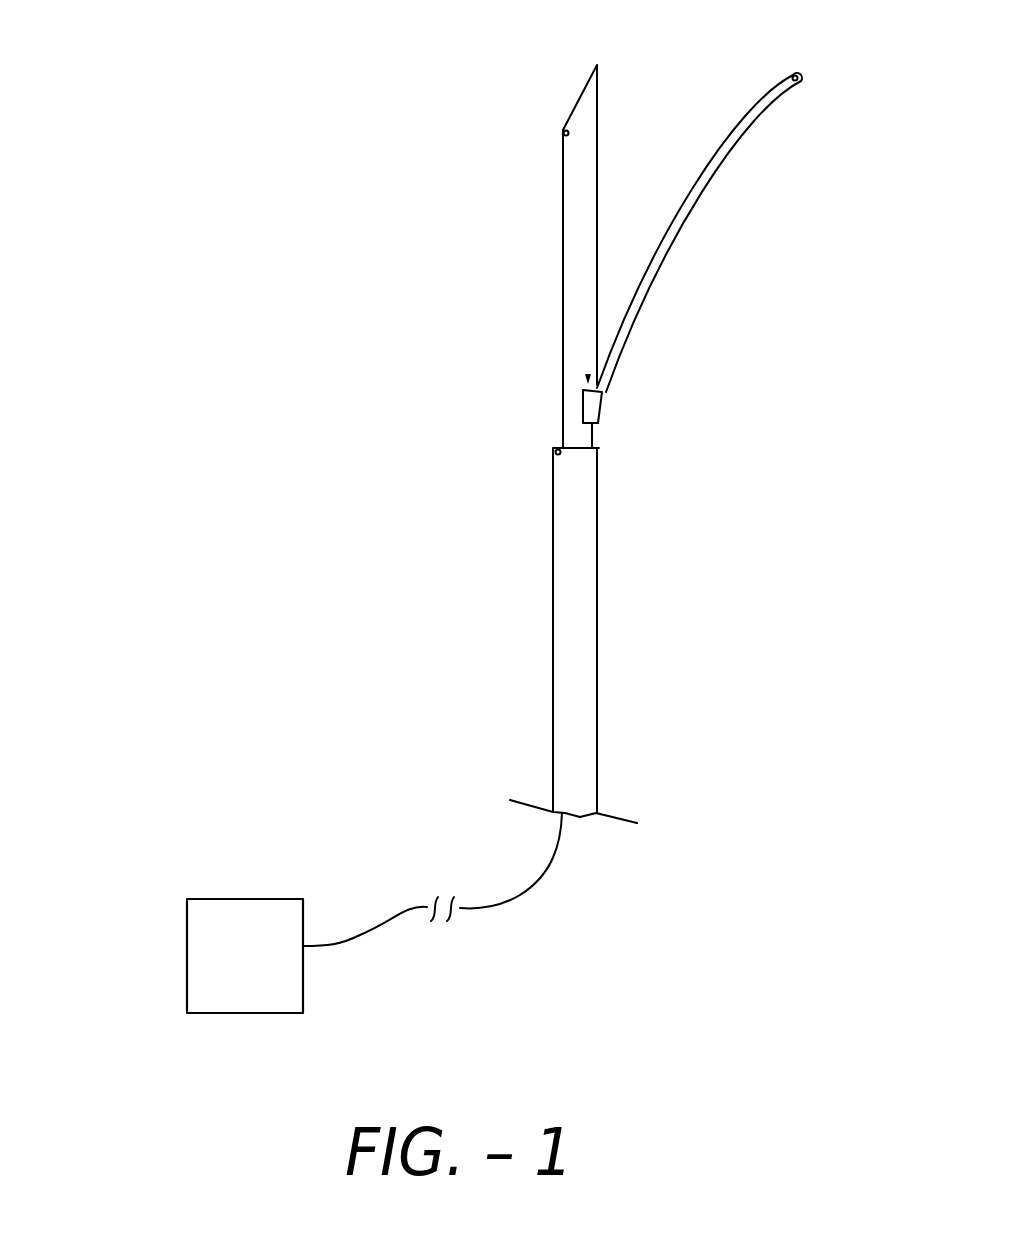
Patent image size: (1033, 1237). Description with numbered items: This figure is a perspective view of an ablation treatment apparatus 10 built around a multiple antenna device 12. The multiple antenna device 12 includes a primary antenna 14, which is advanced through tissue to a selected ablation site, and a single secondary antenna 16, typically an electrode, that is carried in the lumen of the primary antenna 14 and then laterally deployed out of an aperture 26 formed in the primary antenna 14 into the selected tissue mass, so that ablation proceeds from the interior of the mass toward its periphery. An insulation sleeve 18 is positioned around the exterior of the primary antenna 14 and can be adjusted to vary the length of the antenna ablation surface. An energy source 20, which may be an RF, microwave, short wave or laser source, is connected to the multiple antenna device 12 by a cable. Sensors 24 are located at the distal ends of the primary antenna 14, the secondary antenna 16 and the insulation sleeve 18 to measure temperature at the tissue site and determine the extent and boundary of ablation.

The ablation treatment apparatus 10 is at (207, 535).
The multiple antenna device 12 is at (598, 158).
The primary antenna 14 is at (563, 243).
The secondary antenna 16 is at (678, 228).
The insulation sleeve 18 is at (595, 405).
The energy source 20 is at (257, 899).
The sensor 24 is at (563, 123).
The aperture 26 is at (587, 383).